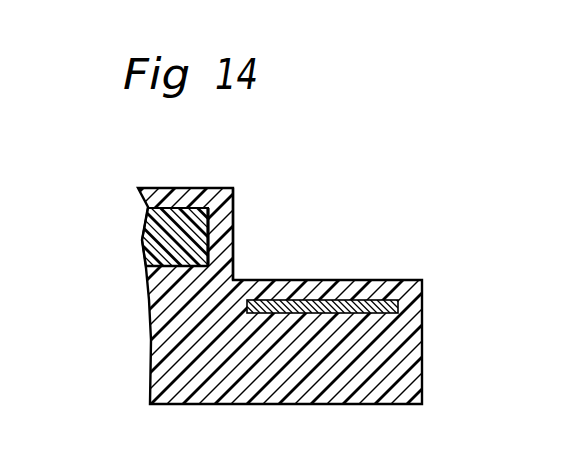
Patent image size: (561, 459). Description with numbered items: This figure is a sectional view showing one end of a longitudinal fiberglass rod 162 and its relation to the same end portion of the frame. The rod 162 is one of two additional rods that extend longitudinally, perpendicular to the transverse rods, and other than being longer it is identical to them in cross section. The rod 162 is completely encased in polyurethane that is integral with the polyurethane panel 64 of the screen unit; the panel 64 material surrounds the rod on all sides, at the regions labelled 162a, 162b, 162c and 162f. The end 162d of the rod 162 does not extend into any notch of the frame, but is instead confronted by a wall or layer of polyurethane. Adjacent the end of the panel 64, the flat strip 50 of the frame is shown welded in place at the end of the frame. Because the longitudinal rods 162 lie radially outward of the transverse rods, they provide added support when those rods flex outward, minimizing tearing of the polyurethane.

The polyurethane panel 64 is at (427, 362).
The longitudinal fiberglass rod 162 is at (157, 221).
The top surface of insert 162a is at (183, 207).
The bottom surface of insert 162b is at (174, 266).
The left side surface of insert 162c is at (150, 245).
The end of the rod 162d is at (214, 220).
The side wall of body adjacent insert 162f is at (222, 250).
The flat strip 50 is at (310, 312).